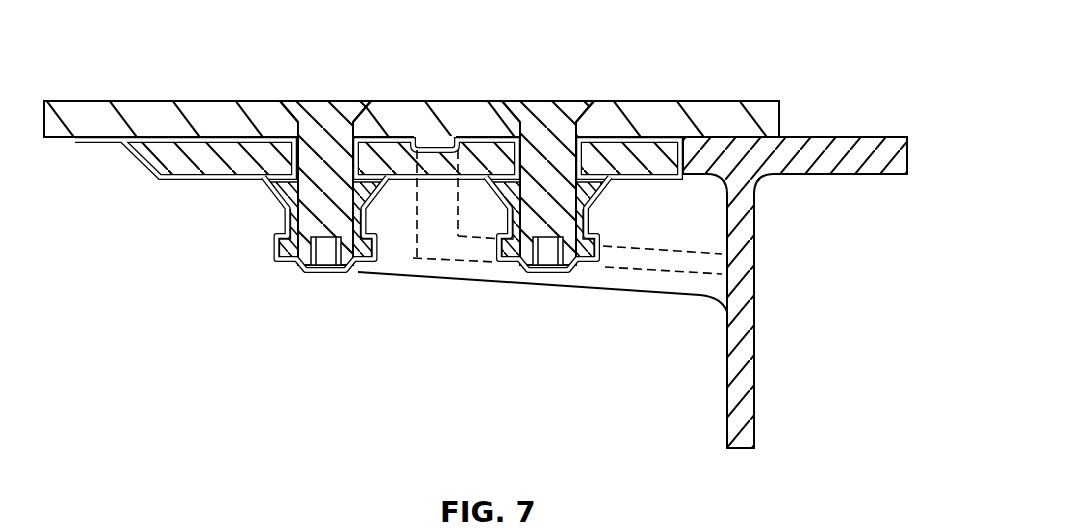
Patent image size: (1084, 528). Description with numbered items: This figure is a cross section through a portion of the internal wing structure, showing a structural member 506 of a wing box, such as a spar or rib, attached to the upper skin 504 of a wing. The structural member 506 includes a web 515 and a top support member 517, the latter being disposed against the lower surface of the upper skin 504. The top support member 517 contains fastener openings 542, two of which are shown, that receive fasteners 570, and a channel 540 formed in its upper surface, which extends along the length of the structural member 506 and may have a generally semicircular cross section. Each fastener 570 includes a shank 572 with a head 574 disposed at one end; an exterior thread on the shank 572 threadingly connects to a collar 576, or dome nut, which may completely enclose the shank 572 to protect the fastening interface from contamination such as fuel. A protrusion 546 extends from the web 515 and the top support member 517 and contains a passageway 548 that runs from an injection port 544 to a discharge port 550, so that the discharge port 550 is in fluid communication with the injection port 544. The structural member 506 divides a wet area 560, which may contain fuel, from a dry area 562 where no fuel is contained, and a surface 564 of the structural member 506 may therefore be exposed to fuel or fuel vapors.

The upper skin 504 is at (673, 100).
The structural member 506 is at (800, 332).
The web 515 is at (770, 400).
The top support member 517 is at (852, 175).
The channel 540 is at (445, 147).
The fastener openings 542 is at (290, 158).
The injection port 544 is at (770, 265).
The protrusion 546 is at (548, 300).
The passageway 548 is at (628, 275).
The discharge port 550 is at (417, 228).
The wet area 560 is at (507, 435).
The dry area 562 is at (900, 310).
The surface 564 is at (727, 403).
The fasteners 570 is at (327, 92).
The shank 572 is at (283, 212).
The head 574 is at (301, 100).
The collar 576 is at (287, 207).